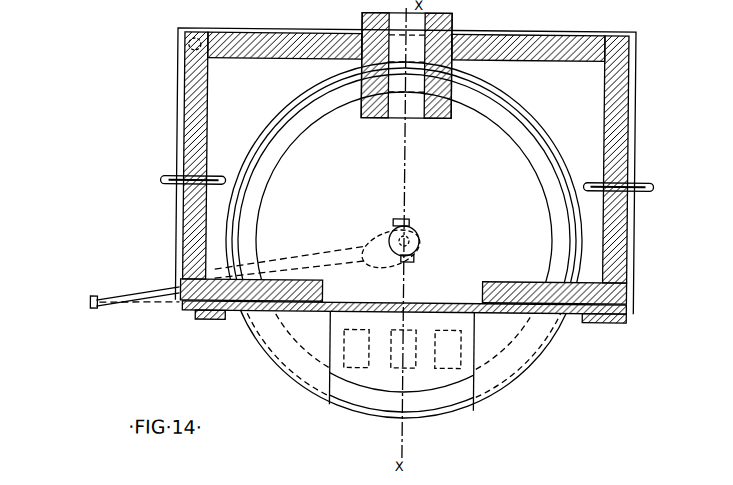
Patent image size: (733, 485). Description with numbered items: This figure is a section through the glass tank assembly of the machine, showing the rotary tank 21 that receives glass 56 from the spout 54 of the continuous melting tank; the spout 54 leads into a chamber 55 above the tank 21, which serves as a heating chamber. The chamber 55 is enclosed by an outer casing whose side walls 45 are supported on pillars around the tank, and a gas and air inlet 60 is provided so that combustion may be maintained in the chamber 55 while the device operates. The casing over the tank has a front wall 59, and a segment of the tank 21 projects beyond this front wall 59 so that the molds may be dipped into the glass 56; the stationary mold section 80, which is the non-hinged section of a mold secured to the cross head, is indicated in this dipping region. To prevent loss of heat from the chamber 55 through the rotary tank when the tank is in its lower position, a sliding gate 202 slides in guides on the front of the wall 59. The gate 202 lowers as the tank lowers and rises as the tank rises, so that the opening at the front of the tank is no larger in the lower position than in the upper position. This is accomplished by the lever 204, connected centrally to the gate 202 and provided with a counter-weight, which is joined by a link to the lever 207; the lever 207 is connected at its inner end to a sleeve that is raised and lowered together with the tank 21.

The tank 21 is at (380, 402).
The outer casing 45 is at (277, 40).
The spout 54 is at (400, 99).
The chamber 55 is at (584, 118).
The glass 56 is at (403, 239).
The front wall 59 is at (585, 307).
The gas and air inlet 60 is at (180, 179).
The stationary mold section 80 is at (410, 369).
The sliding gate 202 is at (269, 309).
The lever 204 is at (151, 307).
The lever 207 is at (307, 258).